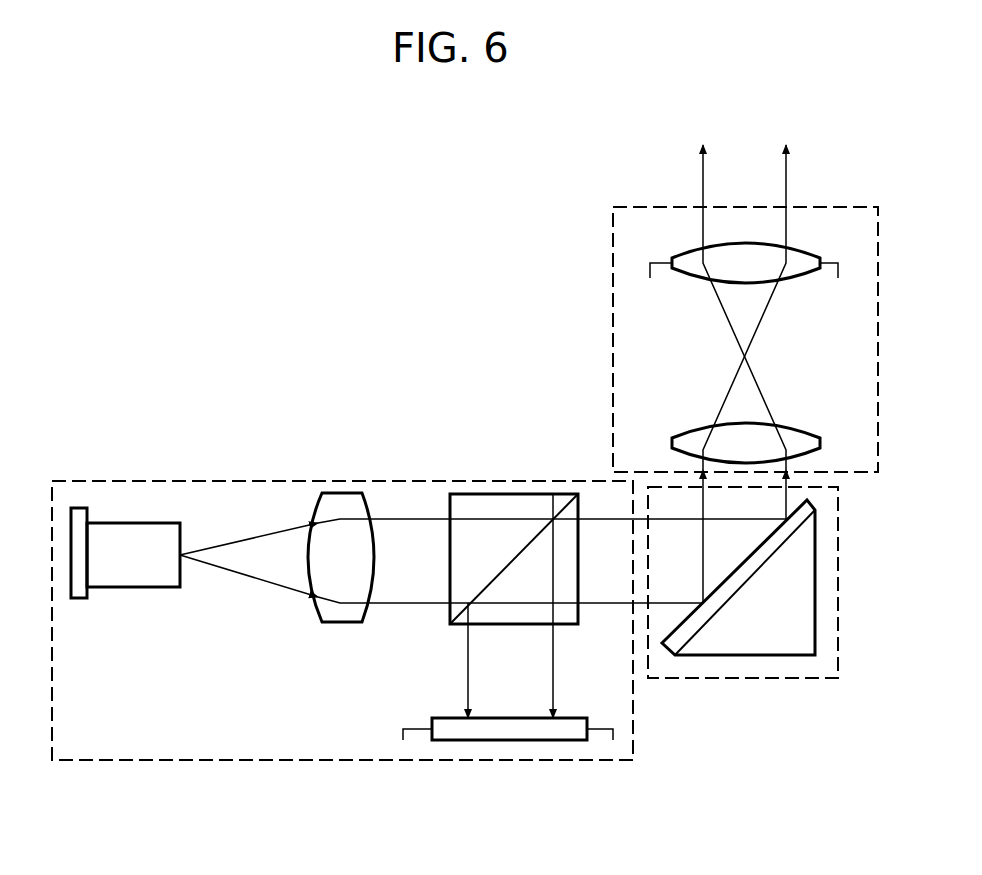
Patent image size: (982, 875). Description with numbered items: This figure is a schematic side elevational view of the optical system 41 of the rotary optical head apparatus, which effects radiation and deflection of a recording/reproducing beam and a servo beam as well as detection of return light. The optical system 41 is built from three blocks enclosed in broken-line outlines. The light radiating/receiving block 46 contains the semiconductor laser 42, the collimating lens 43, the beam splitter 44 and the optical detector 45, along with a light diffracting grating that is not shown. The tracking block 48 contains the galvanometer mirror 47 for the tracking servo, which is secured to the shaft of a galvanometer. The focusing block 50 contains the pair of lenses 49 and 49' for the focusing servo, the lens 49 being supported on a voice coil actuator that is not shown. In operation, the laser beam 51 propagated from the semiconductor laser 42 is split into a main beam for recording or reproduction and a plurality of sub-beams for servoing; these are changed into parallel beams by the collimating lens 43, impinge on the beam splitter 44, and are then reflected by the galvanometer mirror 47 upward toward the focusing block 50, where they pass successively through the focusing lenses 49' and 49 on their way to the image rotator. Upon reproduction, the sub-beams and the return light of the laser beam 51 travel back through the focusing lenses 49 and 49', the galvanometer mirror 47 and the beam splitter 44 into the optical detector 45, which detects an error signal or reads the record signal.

The optical system 41 is at (170, 400).
The semiconductor laser 42 is at (135, 590).
The collimating lens 43 is at (345, 622).
The beam splitter 44 is at (453, 573).
The optical detector 45 is at (530, 735).
The light radiating/receiving block 46 is at (277, 762).
The galvanometer mirror 47 is at (695, 622).
The tracking block 48 is at (757, 680).
The focusing lens 49 is at (744, 290).
The focusing lens 49' is at (752, 417).
The focusing block 50 is at (612, 330).
The laser beam 51 is at (256, 582).